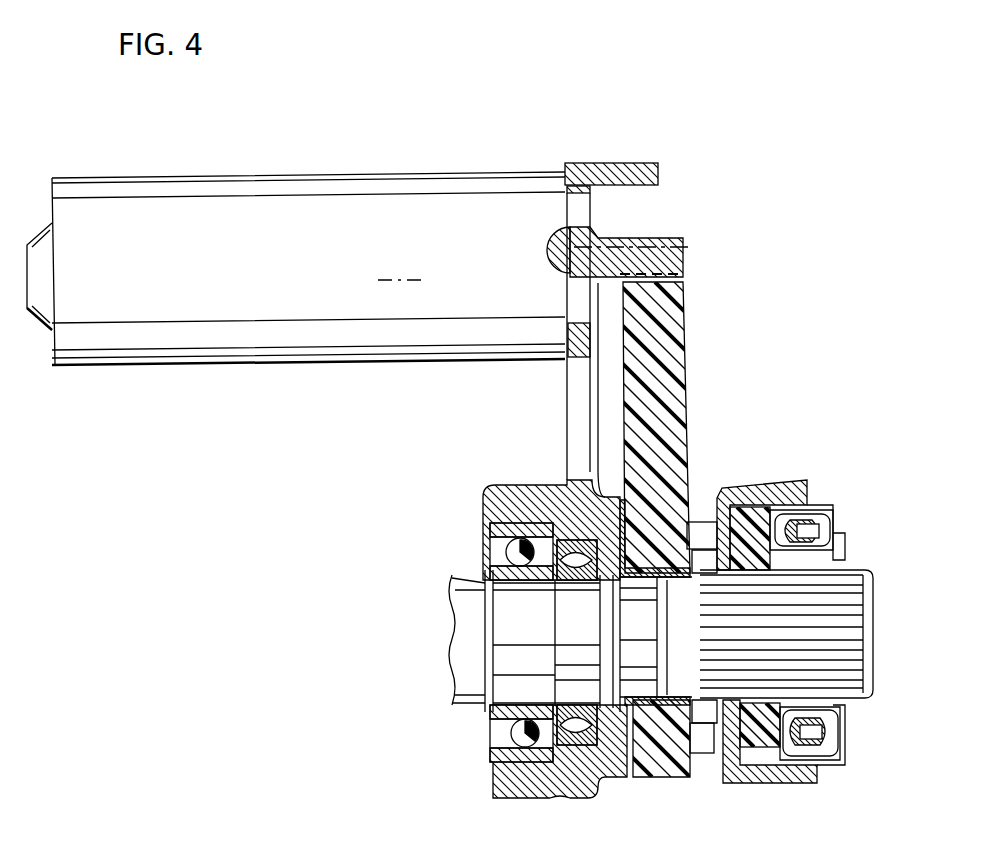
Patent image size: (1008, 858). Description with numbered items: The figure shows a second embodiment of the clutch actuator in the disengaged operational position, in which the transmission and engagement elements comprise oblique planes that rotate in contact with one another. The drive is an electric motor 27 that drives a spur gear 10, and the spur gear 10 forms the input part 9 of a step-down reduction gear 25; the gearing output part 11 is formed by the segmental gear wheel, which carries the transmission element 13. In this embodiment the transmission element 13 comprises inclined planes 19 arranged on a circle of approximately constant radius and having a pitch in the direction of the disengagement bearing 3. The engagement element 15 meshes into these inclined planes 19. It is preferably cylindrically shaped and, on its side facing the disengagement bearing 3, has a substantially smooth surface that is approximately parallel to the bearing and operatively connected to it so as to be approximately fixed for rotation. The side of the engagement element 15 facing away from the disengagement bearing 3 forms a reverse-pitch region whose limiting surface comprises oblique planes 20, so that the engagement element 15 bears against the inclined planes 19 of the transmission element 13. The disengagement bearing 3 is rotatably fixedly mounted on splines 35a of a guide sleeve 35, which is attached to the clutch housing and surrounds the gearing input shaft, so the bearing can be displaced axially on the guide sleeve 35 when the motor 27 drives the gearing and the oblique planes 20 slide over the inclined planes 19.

The disengagement bearing 3 is at (814, 466).
The input part 9 is at (685, 253).
The spur gear 10 is at (653, 240).
The output part 11 is at (668, 400).
The transmission element 13 is at (680, 535).
The engagement element 15 is at (702, 533).
The inclined planes 19 is at (680, 772).
The oblique planes 20 is at (712, 765).
The reduction gear 25 is at (692, 280).
The electric motor 27 is at (305, 330).
The guide sleeve 35 is at (827, 650).
The splines 35a is at (850, 635).